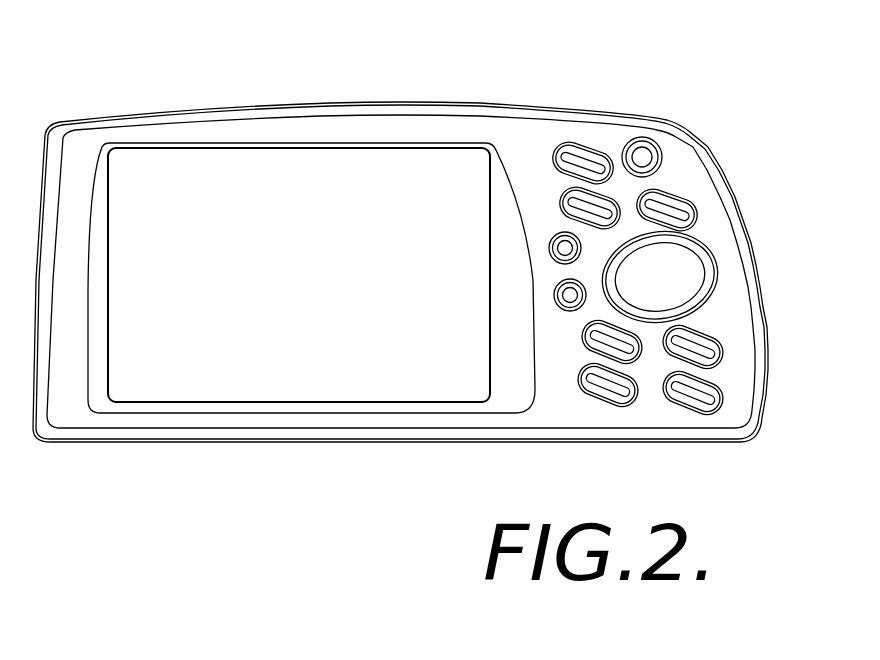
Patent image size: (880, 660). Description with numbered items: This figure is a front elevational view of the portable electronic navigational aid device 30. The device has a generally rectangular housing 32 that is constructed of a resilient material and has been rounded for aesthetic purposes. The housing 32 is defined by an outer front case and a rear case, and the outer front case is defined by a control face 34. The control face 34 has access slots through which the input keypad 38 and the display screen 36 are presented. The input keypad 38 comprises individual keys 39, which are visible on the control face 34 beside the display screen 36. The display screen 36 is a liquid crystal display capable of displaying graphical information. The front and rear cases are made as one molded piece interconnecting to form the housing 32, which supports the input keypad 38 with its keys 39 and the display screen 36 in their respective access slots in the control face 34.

The portable electronic navigational aid device 30 is at (672, 70).
The housing 32 is at (203, 112).
The control face 34 is at (440, 127).
The display screen 36 is at (242, 393).
The input keypad 38 is at (697, 283).
The keys 39 is at (687, 205).